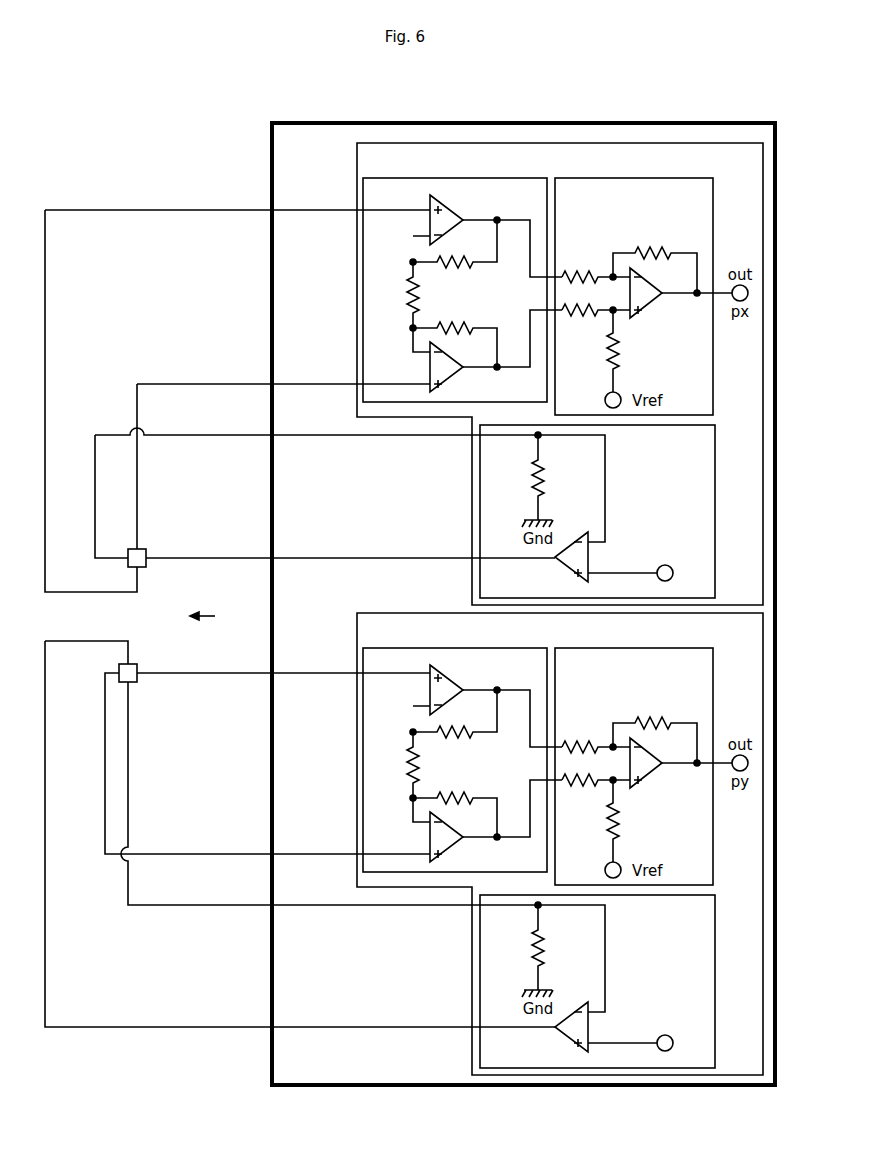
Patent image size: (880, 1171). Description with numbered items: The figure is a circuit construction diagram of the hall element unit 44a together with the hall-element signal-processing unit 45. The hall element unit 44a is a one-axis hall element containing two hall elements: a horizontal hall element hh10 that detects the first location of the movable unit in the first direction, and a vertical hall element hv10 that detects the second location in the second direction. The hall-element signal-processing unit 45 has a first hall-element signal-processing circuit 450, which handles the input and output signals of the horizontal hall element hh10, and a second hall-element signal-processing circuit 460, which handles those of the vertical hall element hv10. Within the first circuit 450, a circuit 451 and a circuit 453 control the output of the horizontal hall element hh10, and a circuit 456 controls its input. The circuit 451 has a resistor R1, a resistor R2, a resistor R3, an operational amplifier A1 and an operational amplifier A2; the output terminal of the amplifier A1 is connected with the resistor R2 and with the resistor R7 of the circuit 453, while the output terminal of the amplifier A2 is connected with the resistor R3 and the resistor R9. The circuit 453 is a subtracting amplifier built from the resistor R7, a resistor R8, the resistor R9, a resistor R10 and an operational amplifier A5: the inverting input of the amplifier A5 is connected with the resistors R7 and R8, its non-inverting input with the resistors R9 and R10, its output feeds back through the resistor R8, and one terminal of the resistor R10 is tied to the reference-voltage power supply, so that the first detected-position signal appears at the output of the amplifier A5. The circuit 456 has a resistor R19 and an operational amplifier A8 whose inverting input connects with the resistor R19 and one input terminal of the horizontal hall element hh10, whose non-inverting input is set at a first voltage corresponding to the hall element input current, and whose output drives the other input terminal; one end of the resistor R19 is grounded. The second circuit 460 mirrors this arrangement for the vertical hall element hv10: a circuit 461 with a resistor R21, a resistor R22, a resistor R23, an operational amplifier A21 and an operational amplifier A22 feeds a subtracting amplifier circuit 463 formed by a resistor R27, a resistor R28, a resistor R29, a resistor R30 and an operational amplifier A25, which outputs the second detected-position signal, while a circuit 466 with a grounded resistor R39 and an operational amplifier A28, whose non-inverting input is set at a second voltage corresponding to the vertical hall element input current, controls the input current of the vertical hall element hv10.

The hall-element signal-processing unit 45 is at (722, 123).
The first hall-element signal-processing circuit 450 is at (357, 272).
The circuit 451 is at (476, 178).
The circuit 453 is at (680, 178).
The circuit 456 is at (715, 485).
The second hall-element signal-processing circuit 460 is at (530, 844).
The circuit 461 is at (455, 748).
The circuit 463 is at (646, 754).
The circuit 466 is at (615, 981).
The hall element unit 44a is at (219, 617).
The horizontal hall element hh10 is at (146, 566).
The vertical hall element hv10 is at (137, 664).
The operational amplifier A1 is at (452, 212).
The operational amplifier A2 is at (454, 372).
The operational amplifier A5 is at (655, 303).
The operational amplifier A8 is at (592, 566).
The resistor R1 is at (408, 292).
The resistor R2 is at (470, 262).
The resistor R3 is at (466, 328).
The resistor R7 is at (566, 276).
The resistor R8 is at (667, 266).
The resistor R9 is at (582, 314).
The resistor R10 is at (620, 360).
The resistor R19 is at (548, 485).
The operational amplifier A21 is at (487, 703).
The operational amplifier A22 is at (487, 821).
The operational amplifier A25 is at (681, 774).
The operational amplifier A28 is at (628, 1027).
The resistor R21 is at (395, 766).
The resistor R22 is at (465, 722).
The resistor R23 is at (458, 806).
The resistor R27 is at (596, 729).
The resistor R28 is at (660, 735).
The resistor R29 is at (596, 798).
The resistor R30 is at (637, 829).
The resistor R39 is at (554, 949).